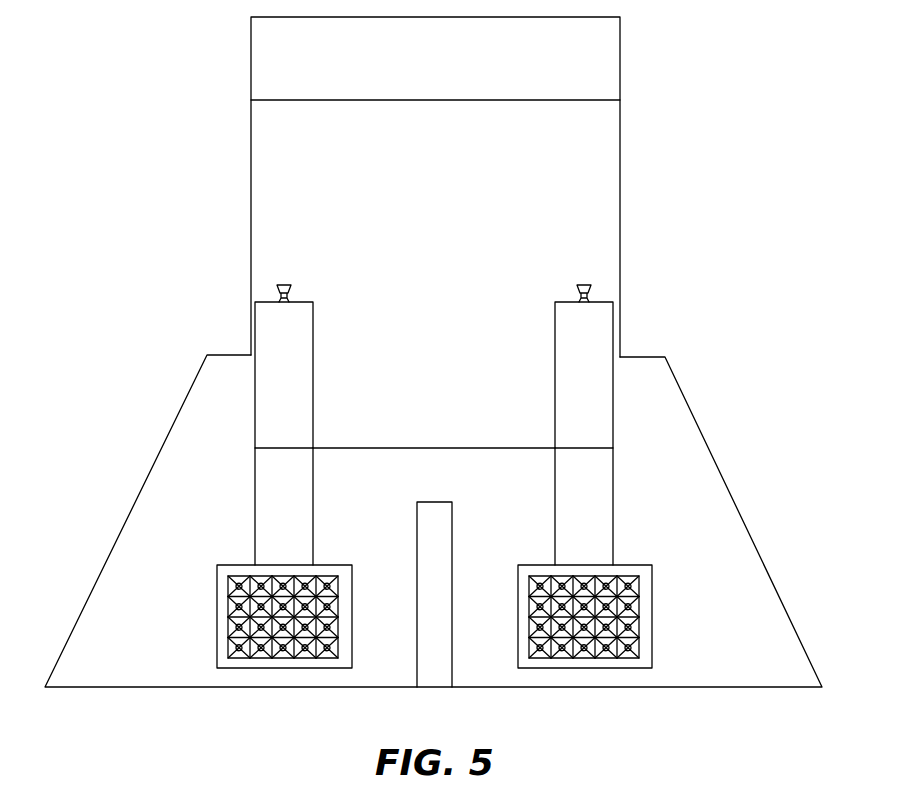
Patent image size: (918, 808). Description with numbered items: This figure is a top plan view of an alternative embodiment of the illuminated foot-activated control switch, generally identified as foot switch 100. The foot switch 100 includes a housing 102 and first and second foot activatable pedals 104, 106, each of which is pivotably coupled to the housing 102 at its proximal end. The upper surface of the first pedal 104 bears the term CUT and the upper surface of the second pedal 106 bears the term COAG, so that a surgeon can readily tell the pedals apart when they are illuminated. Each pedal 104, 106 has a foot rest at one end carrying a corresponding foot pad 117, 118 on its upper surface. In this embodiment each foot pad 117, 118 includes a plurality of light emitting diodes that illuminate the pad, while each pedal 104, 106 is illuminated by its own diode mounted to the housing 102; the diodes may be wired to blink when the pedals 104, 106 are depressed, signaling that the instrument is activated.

The foot switch 100 is at (155, 195).
The housing 102 is at (598, 164).
The first foot activatable pedal 104 is at (277, 505).
The second foot activatable pedal 106 is at (593, 505).
The foot pad 117 is at (300, 658).
The foot pad 118 is at (628, 658).